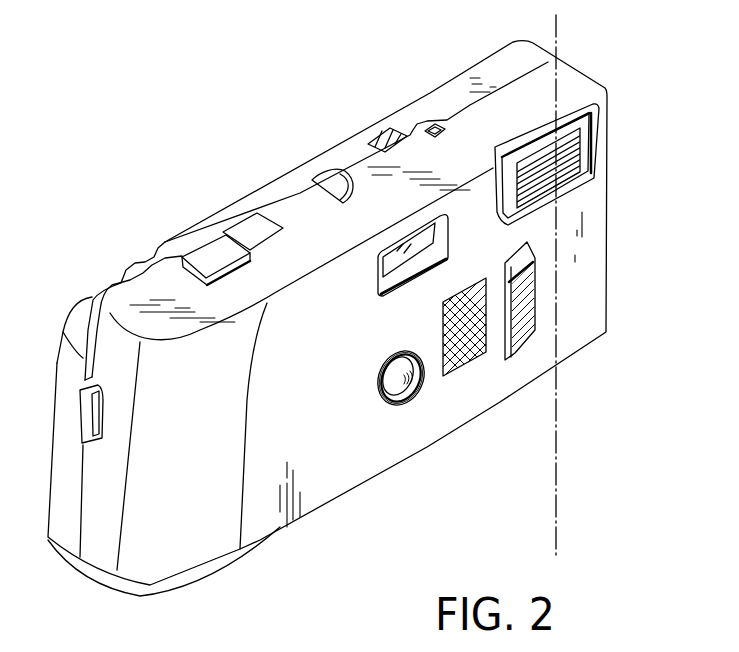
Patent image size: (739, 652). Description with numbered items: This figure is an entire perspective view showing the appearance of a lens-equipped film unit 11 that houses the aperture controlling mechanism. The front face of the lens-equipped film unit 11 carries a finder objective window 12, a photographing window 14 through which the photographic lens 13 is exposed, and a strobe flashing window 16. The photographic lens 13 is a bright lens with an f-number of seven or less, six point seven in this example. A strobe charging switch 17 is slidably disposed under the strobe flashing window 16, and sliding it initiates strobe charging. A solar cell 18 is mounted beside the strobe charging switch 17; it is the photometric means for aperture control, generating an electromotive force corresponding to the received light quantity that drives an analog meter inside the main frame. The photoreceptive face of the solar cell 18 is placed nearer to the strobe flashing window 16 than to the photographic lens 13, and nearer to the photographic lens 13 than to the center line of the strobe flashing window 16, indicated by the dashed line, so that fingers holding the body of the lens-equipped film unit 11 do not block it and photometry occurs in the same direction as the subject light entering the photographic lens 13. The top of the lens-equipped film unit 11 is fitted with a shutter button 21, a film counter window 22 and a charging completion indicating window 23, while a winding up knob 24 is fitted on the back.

The lens-equipped film unit 11 is at (189, 102).
The finder objective window 12 is at (378, 293).
The photographic lens 13 is at (393, 395).
The photographing window 14 is at (417, 390).
The strobe flashing window 16 is at (592, 153).
The strobe charging switch 17 is at (530, 303).
The solar cell 18 is at (483, 355).
The shutter button 21 is at (203, 247).
The film counter window 22 is at (326, 170).
The charging completion indicating window 23 is at (402, 133).
The winding up knob 24 is at (114, 266).